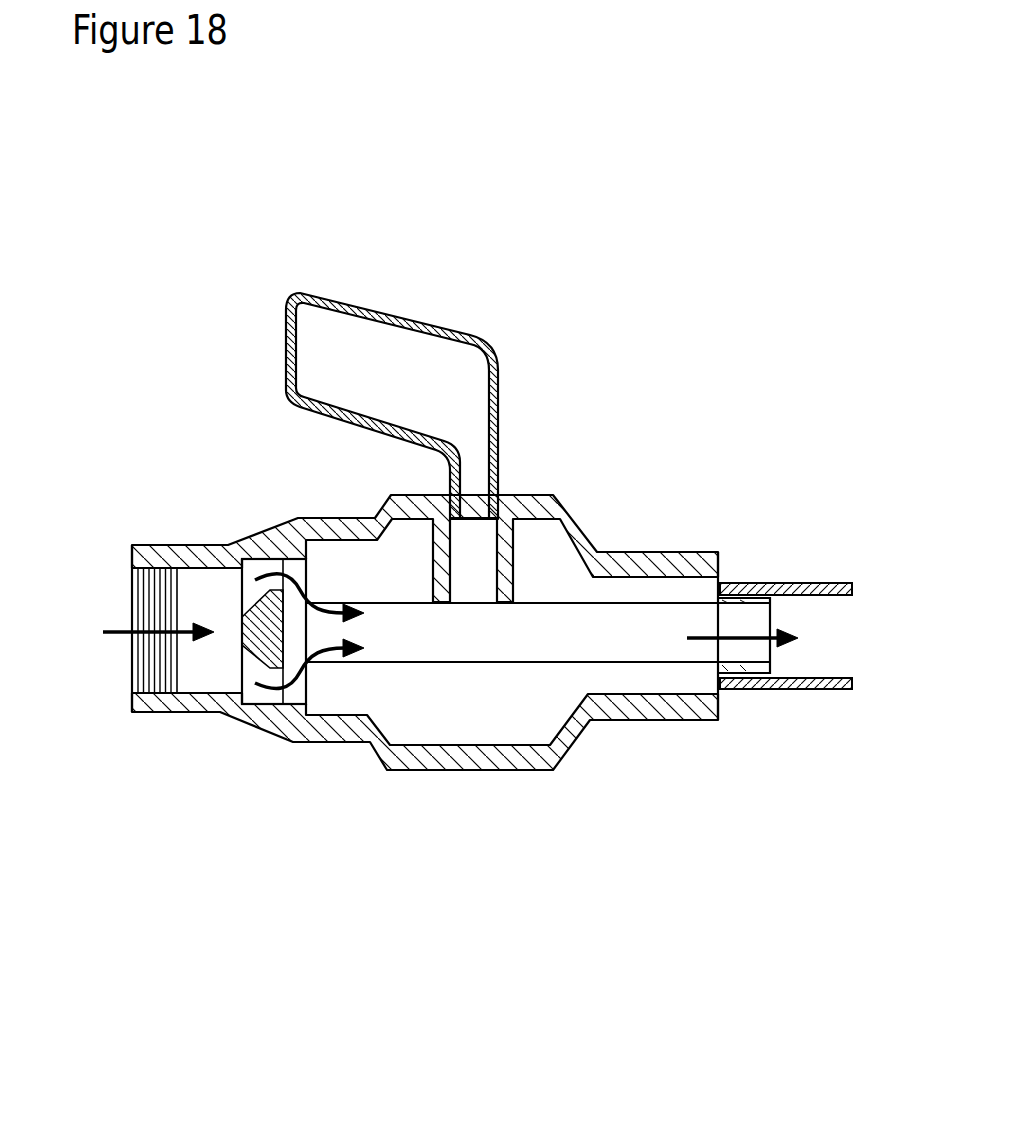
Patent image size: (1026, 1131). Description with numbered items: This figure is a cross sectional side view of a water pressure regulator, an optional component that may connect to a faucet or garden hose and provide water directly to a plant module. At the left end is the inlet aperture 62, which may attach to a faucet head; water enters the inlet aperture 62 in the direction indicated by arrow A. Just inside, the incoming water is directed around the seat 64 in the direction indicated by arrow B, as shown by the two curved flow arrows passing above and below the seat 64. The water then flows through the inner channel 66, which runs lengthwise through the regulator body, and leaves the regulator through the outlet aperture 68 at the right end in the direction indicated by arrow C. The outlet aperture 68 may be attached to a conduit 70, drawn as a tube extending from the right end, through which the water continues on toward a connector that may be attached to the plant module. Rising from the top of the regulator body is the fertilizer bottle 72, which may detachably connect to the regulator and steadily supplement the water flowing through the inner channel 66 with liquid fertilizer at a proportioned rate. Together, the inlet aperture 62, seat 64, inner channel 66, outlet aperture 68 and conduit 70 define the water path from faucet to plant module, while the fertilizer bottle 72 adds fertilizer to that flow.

The inlet aperture 62 is at (133, 648).
The seat 64 is at (257, 643).
The inner channel 66 is at (525, 632).
The outlet aperture 68 is at (773, 655).
The conduit 70 is at (797, 583).
The fertilizer bottle 72 is at (457, 327).
The arrow A is at (116, 630).
The arrow B is at (257, 578).
The arrow C is at (727, 643).